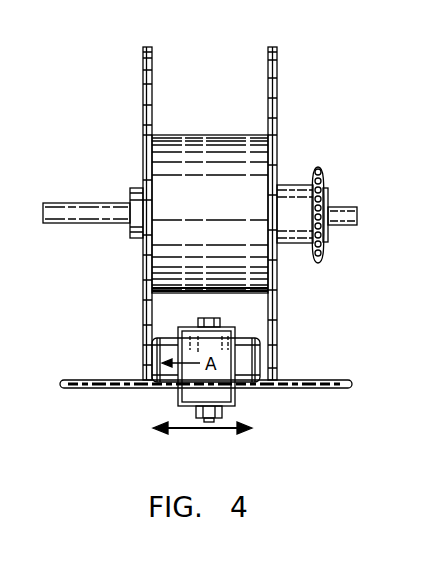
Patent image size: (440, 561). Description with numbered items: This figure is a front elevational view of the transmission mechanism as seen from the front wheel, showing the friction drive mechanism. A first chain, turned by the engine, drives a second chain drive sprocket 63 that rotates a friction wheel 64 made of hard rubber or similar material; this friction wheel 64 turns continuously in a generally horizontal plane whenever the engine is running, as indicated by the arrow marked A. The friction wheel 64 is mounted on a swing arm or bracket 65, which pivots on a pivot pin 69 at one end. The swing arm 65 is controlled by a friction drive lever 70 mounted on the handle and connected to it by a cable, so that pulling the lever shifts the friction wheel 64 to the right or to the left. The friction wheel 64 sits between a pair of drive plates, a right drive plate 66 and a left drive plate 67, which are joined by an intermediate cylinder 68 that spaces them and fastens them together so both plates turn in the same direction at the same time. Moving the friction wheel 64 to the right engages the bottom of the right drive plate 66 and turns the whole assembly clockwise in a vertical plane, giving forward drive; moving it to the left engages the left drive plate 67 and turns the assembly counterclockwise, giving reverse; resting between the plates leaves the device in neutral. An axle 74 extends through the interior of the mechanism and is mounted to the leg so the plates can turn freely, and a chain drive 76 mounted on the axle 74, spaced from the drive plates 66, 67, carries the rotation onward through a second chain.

The second chain drive sprocket 63 is at (108, 382).
The friction wheel 64 is at (256, 390).
The swing arm 65 is at (178, 392).
The right drive plate 66 is at (277, 100).
The left drive plate 67 is at (143, 83).
The intermediate cylinder 68 is at (192, 150).
The pivot pin 69 is at (222, 416).
The friction drive lever 70 is at (93, 213).
The axle 74 is at (358, 214).
The chain drive 76 is at (322, 174).